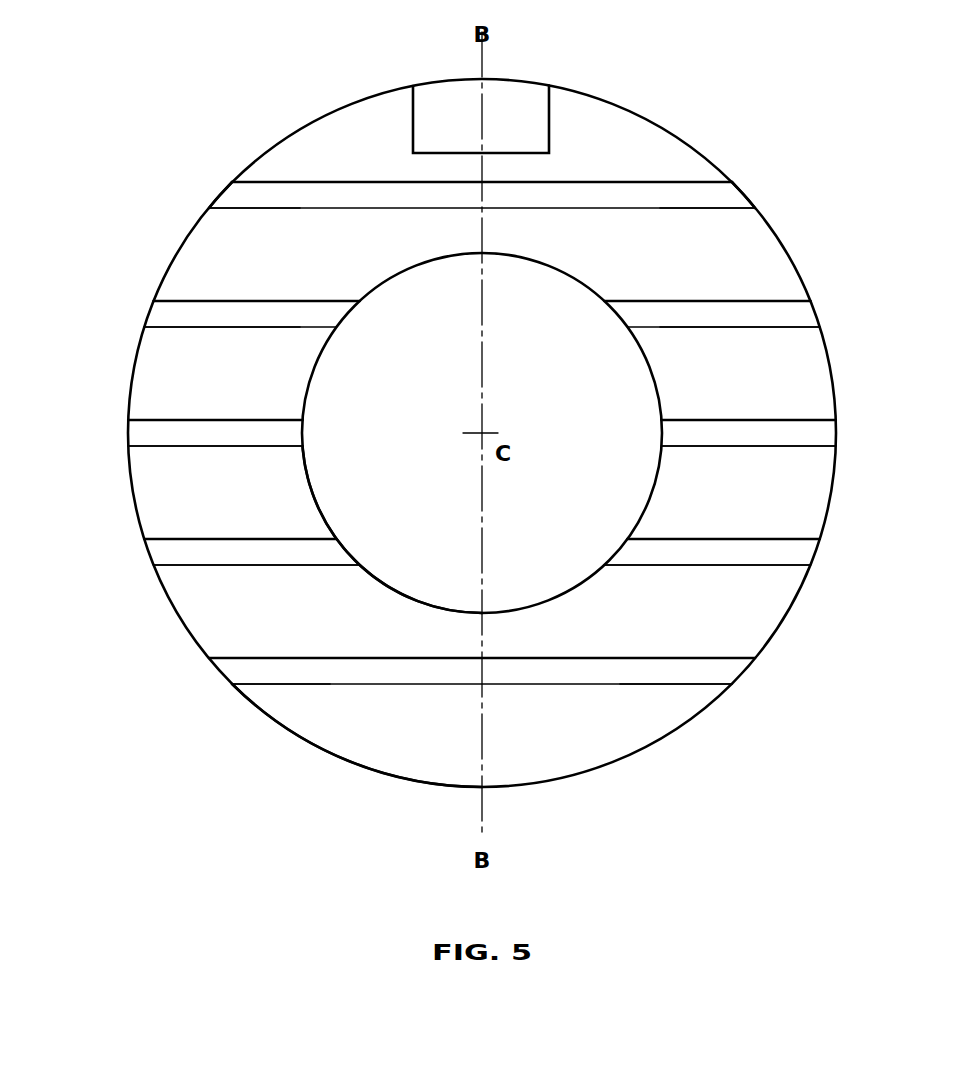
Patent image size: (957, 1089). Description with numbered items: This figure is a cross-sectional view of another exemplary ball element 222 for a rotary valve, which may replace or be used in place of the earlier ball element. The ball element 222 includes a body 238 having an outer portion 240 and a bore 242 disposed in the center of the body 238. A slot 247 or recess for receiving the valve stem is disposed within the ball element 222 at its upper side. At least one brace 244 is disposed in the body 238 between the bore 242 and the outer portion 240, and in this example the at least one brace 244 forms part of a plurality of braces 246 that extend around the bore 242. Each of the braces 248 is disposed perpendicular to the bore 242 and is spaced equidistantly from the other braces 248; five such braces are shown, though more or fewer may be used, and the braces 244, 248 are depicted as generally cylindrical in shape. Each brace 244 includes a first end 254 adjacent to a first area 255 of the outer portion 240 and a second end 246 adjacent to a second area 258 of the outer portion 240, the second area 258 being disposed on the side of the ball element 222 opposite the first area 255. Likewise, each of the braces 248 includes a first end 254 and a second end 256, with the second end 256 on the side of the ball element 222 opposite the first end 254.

The ball element 222 is at (127, 254).
The body 238 is at (168, 510).
The outer portion 240 is at (190, 636).
The bore 242 is at (405, 545).
The brace 244 is at (433, 684).
The plurality of braces 246 is at (770, 670).
The slot 247 is at (412, 125).
The braces 248 is at (503, 210).
The first end 254 is at (235, 210).
The first area 255 is at (203, 216).
The second end 256 is at (720, 210).
The second area 258 is at (762, 212).